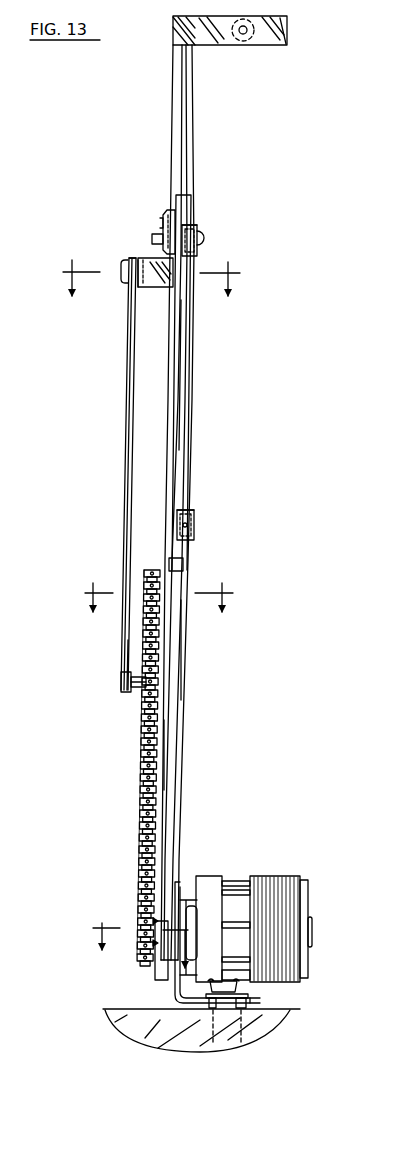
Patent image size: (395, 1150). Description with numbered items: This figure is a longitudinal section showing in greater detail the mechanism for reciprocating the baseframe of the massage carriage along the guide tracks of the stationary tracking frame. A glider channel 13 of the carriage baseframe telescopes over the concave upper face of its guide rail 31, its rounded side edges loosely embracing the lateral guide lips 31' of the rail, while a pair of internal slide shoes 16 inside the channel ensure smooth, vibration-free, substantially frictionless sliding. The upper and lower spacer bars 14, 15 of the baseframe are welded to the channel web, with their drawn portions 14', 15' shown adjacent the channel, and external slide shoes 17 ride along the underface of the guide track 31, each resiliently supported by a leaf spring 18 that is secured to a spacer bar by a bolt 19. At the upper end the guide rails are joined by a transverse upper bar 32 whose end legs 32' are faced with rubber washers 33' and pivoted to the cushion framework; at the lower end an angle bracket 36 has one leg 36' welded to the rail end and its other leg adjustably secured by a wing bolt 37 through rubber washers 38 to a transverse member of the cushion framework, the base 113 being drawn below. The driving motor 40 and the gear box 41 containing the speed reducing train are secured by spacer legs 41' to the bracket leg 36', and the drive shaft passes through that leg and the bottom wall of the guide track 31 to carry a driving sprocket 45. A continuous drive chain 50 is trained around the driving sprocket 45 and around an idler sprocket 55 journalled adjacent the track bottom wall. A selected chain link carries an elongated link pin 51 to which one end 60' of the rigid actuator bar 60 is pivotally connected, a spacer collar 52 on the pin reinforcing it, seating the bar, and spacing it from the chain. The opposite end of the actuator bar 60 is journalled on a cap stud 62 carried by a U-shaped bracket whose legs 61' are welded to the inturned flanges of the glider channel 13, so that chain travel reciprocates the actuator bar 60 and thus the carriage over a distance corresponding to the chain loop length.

The glider channel 13 is at (194, 355).
The upper spacer bar 14 is at (169, 600).
The carriage block top 14' is at (213, 202).
The lower spacer bar 15 is at (162, 552).
The lower guide block top 15' is at (205, 492).
The internal slide shoe 16 is at (151, 270).
The external slide shoe 17 is at (168, 210).
The leaf spring 18 is at (160, 224).
The bolt 19 is at (203, 238).
The guide rail 31 is at (175, 502).
The lateral guide lip 31' is at (204, 650).
The transverse upper bar 32 is at (230, 51).
The end leg 32' is at (289, 52).
The rubber washer 33' is at (242, 52).
The angle bracket 36 is at (201, 1052).
The bracket leg 36' is at (143, 959).
The wing bolt 37 is at (233, 1030).
The rubber washer 38 is at (246, 1000).
The driving motor 40 is at (282, 870).
The gear box 41 is at (218, 910).
The spacer leg 41' is at (217, 912).
The driving sprocket 45 is at (155, 922).
The continuous drive chain 50 is at (140, 739).
The elongated link pin 51 is at (120, 680).
The spacer collar 52 is at (133, 688).
The idler sprocket 55 is at (140, 588).
The actuator bar 60 is at (111, 474).
The actuator bar end 60' is at (105, 665).
The bracket leg 61' is at (155, 295).
The cap stud 62 is at (121, 262).
The base 113 is at (185, 1050).